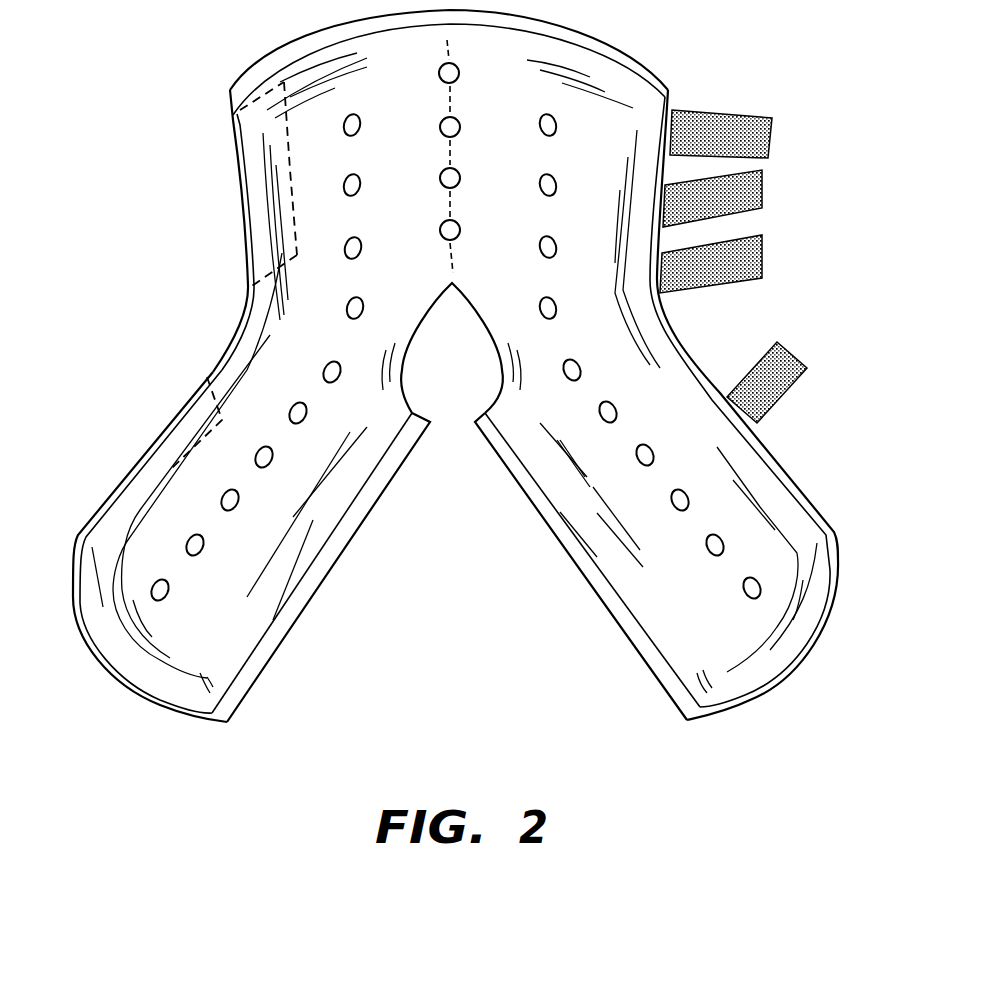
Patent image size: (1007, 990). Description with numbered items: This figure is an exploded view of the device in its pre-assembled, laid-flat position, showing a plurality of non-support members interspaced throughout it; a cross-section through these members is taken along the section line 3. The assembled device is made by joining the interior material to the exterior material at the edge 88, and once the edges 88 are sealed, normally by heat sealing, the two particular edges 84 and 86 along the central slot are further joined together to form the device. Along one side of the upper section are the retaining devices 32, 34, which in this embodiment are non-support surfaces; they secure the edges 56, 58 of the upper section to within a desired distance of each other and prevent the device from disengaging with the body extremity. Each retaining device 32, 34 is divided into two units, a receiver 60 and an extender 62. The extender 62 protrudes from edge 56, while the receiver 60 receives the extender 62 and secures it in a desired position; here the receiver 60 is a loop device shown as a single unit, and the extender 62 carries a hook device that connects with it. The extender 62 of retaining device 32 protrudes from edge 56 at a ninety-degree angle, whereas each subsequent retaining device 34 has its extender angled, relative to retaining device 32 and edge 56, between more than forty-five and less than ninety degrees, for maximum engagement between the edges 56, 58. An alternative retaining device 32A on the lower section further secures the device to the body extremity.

The section line 3— 3 is at (343, 193).
The retaining device 32 is at (760, 135).
The alternative retaining device 32A is at (773, 397).
The retaining device 34 is at (757, 193).
The edge 56 is at (670, 98).
The edge 58 is at (240, 157).
The receiver 60 is at (256, 208).
The extender 62 is at (776, 201).
The edge 84 is at (550, 530).
The edge 86 is at (345, 533).
The edge 88 is at (125, 476).